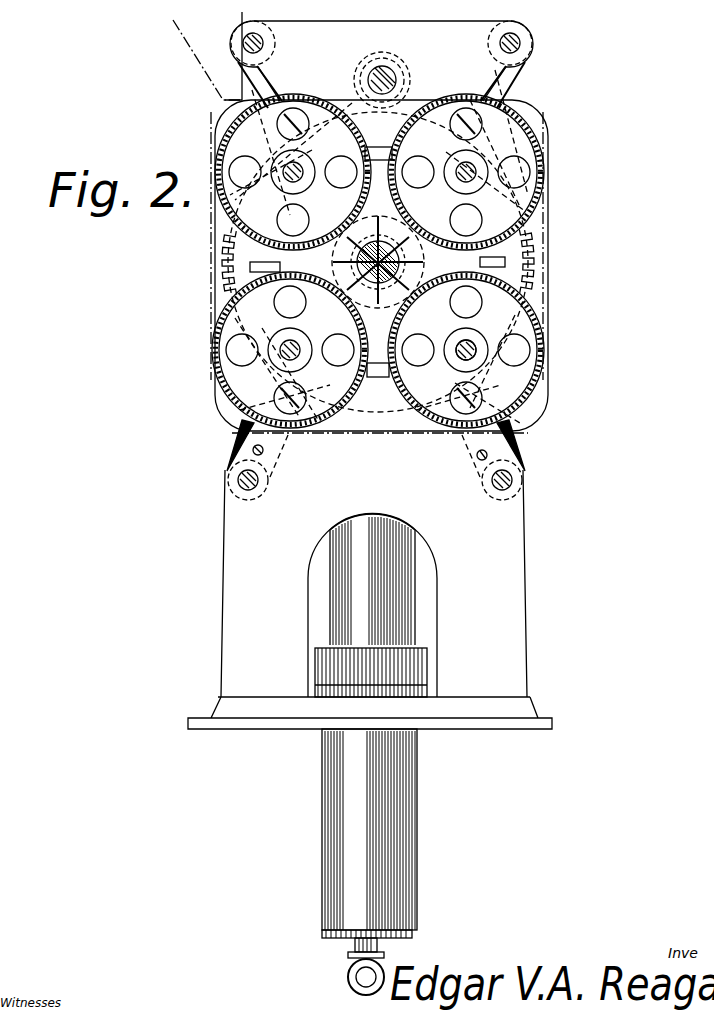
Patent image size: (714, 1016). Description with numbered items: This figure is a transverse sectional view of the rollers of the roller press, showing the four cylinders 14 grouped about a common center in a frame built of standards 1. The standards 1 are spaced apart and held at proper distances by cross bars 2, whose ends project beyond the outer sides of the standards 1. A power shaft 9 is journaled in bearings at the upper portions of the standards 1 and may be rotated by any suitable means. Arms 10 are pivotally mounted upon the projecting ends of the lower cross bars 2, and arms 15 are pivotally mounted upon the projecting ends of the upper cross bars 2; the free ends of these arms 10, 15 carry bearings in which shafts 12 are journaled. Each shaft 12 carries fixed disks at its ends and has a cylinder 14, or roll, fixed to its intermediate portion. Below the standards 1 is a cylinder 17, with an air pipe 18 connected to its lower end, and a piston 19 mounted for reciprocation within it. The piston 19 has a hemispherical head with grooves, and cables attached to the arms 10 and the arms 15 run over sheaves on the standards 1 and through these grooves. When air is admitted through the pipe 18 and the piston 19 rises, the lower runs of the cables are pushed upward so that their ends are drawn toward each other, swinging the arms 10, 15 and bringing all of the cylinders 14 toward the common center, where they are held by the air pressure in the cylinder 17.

The standard 1 is at (490, 573).
The cross bar 2 is at (258, 480).
The power shaft 9 is at (392, 72).
The arm 10 is at (517, 435).
The shaft 12 is at (470, 347).
The cylinder 14 is at (230, 104).
The arm 15 is at (250, 87).
The cylinder 17 is at (330, 806).
The air pipe 18 is at (352, 968).
The piston 19 is at (357, 589).